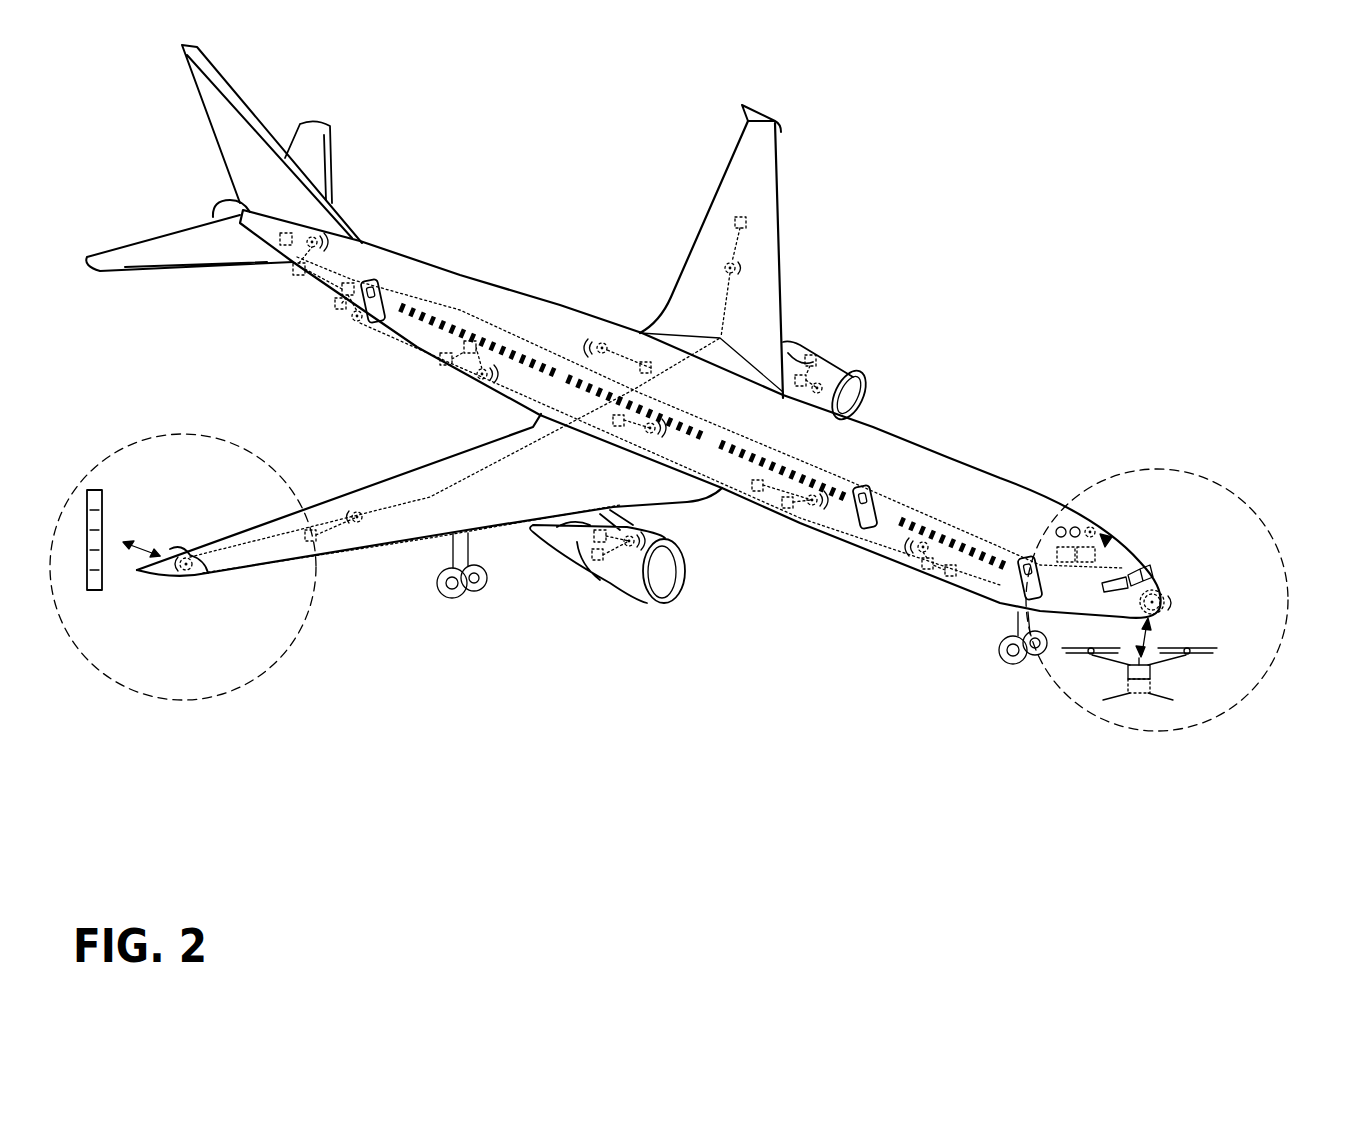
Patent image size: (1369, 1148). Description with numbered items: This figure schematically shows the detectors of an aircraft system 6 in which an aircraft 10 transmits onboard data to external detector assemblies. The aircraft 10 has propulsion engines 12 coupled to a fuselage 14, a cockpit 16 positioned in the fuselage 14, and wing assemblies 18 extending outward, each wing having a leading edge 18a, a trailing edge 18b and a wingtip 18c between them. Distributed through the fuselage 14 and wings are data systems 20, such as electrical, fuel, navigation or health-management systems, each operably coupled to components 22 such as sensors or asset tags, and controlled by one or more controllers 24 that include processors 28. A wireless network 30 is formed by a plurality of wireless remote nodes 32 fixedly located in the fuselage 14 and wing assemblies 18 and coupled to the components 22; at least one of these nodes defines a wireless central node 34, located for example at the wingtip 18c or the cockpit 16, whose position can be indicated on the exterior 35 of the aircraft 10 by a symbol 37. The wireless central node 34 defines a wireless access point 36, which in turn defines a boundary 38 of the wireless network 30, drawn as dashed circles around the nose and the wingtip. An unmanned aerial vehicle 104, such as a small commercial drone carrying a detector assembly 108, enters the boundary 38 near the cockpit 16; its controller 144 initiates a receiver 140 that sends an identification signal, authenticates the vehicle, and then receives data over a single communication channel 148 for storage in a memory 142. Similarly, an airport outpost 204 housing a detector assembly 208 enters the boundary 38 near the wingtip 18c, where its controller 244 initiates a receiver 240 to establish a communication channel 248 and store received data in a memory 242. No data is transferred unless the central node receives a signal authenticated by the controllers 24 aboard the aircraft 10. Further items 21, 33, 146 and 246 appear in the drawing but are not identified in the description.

The aircraft system 6 is at (1124, 128).
The aircraft 10 is at (950, 454).
The propulsion engines 12 is at (610, 563).
The fuselage 14 is at (877, 447).
The cockpit 16 is at (1170, 593).
The wing assemblies 18 is at (720, 270).
The leading edge 18a is at (782, 243).
The trailing edge 18b is at (722, 178).
The wingtip 18c is at (770, 120).
The data system 20 is at (353, 280).
The horizontal stabilizer 21 is at (318, 170).
The component 22 is at (290, 270).
The controller 24 is at (1058, 530).
The processor 28 is at (1110, 546).
The wireless network 30 is at (1190, 608).
The wireless remote nodes 32 is at (747, 419).
The transceiver 33 is at (318, 240).
The wireless central node 34 is at (1180, 590).
The exterior 35 is at (1173, 595).
The wireless access point 36 is at (1167, 613).
The symbol 37 is at (1173, 597).
The boundary 38 is at (247, 683).
The unmanned aerial vehicle 104 is at (1187, 697).
The detector assembly 108 is at (1040, 670).
The receiver 140 is at (1152, 673).
The memory 142 is at (1134, 694).
The controller 144 is at (1140, 694).
The UAV sensor 146 is at (1148, 694).
The communication channel 148 is at (1150, 642).
The airport outpost 204 is at (94, 490).
The detector assembly 208 is at (87, 490).
The receiver 240 is at (103, 510).
The memory 242 is at (105, 540).
The controller 244 is at (105, 555).
The sensor beam 246 is at (110, 560).
The communication channel 248 is at (160, 555).